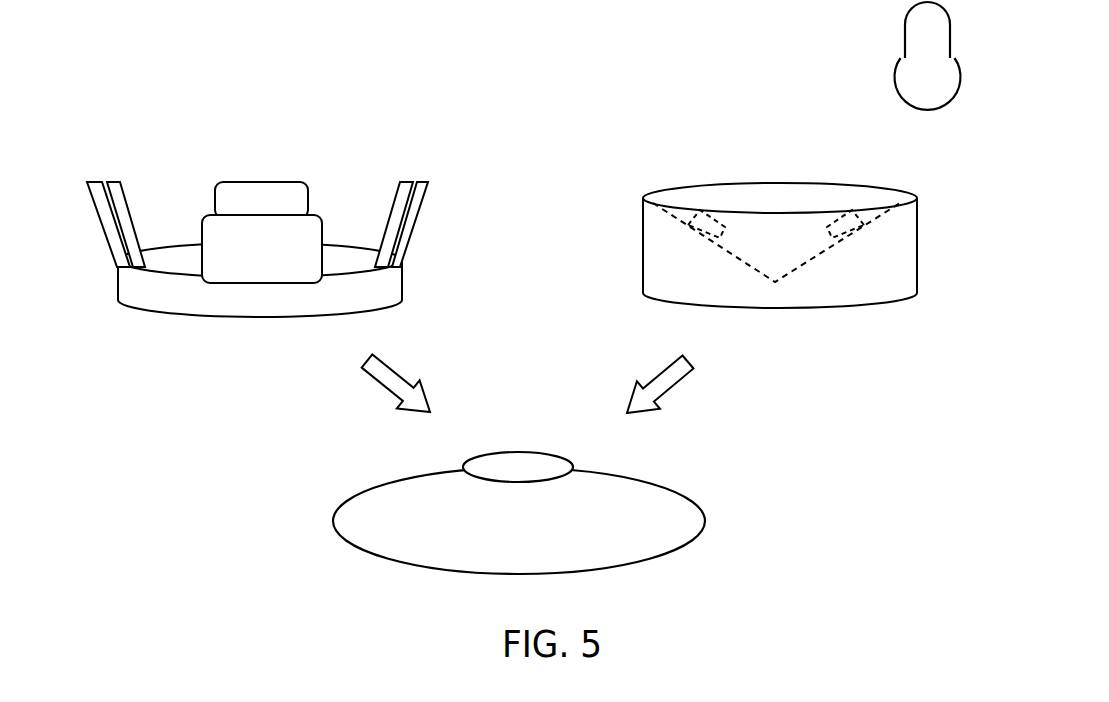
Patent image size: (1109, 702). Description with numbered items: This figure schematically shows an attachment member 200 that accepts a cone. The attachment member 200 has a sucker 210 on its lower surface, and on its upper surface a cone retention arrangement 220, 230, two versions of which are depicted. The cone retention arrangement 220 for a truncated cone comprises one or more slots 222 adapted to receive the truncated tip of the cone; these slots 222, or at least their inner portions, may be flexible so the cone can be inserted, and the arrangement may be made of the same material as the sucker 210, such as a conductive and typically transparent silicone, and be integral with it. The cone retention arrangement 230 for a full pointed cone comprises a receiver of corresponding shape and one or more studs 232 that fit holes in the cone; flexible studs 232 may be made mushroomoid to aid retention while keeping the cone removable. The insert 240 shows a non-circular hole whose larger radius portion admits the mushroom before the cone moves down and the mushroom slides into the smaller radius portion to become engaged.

The attachment member 200 is at (930, 524).
The sucker 210 is at (662, 524).
The cone retention arrangement 220 is at (215, 330).
The slots 222 is at (386, 194).
The cone retention arrangement 230 is at (866, 319).
The studs 232 is at (827, 196).
The insert 240 is at (955, 91).